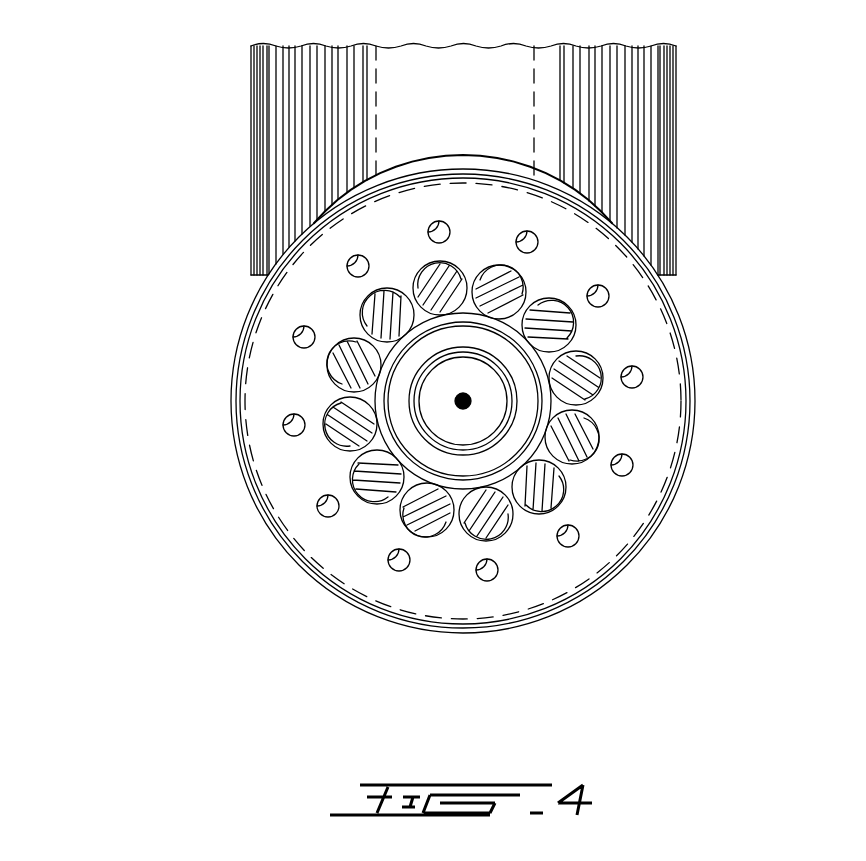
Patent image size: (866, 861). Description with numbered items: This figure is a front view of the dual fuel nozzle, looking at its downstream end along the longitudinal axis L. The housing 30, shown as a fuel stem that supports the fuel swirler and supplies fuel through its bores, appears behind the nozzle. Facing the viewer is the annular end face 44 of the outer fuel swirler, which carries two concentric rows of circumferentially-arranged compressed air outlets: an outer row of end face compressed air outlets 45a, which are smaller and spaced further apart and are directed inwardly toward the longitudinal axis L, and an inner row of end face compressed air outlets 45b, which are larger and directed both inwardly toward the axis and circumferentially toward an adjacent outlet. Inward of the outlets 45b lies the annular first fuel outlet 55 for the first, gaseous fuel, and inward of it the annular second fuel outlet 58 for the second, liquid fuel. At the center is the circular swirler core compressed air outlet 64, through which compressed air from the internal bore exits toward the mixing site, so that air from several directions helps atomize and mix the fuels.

The housing 30 is at (278, 85).
The end face 44 is at (645, 318).
The outer row of end face compressed air outlets 45a is at (624, 460).
The inner row of end face compressed air outlets 45b is at (470, 527).
The first fuel outlet 55 is at (395, 436).
The second fuel outlet 58 is at (498, 427).
The swirler core compressed air outlet 64 is at (443, 385).
The longitudinal axis L is at (462, 402).